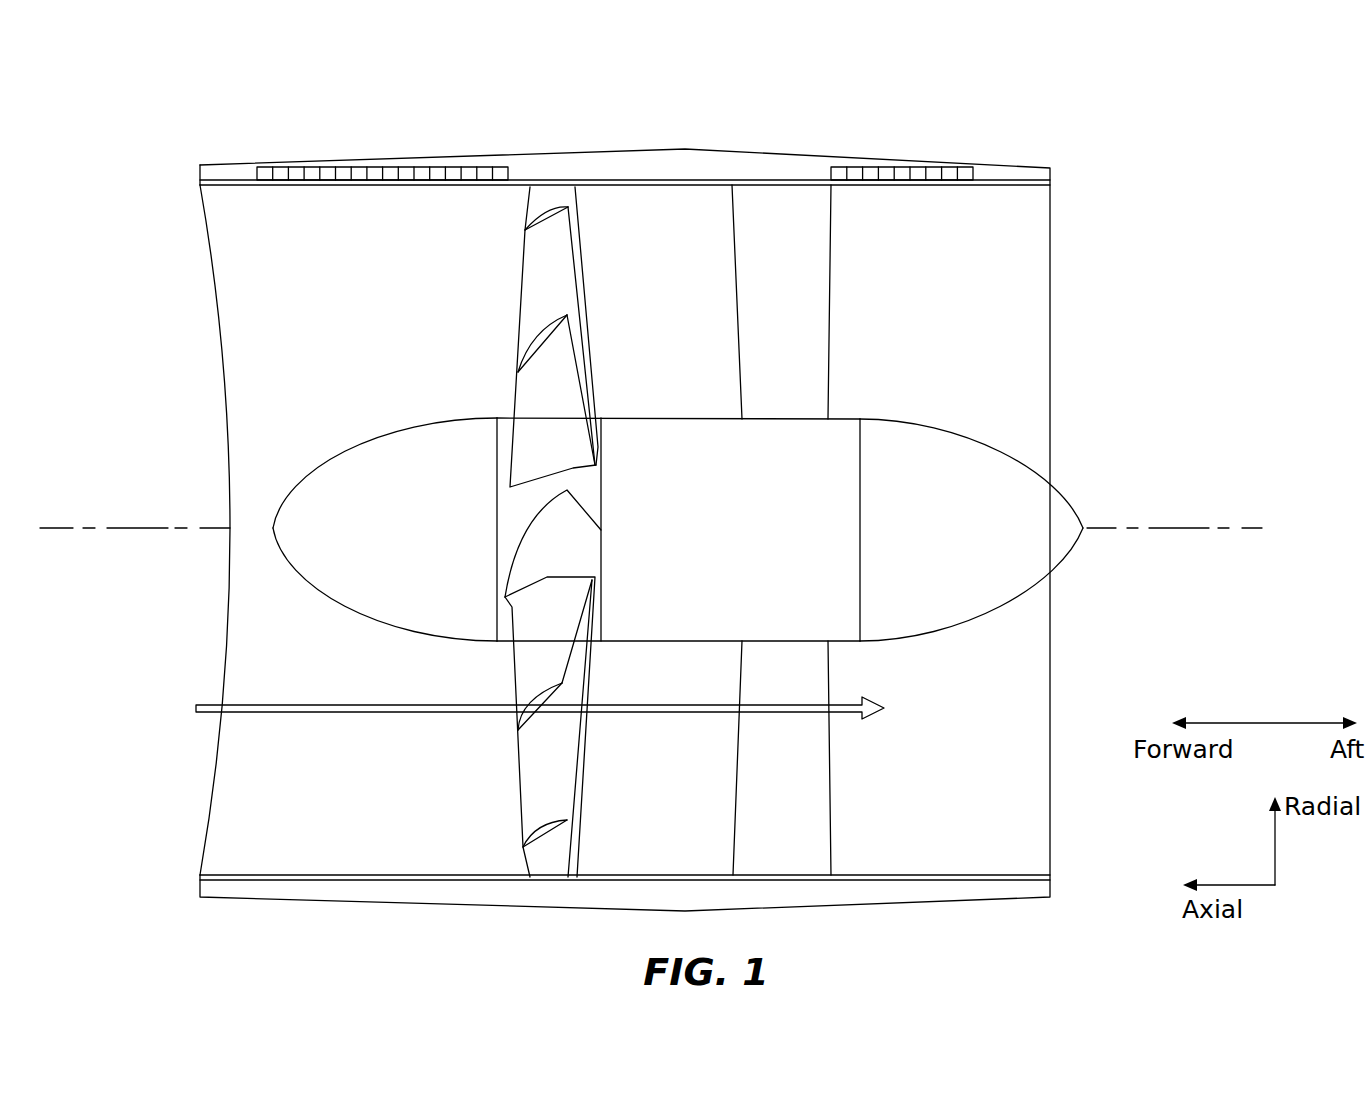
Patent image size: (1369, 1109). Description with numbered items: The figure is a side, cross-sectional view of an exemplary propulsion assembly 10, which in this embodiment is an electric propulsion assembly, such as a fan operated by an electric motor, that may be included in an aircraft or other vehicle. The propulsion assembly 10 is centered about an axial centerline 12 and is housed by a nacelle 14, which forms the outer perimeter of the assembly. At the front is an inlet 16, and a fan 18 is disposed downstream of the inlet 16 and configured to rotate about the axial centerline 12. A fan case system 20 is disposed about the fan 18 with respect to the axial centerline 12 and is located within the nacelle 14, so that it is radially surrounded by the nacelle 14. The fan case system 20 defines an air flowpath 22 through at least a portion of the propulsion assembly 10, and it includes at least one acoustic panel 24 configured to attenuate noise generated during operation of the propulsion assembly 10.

The propulsion assembly 10 is at (1149, 167).
The axial centerline 12 is at (1257, 527).
The nacelle 14 is at (842, 160).
The inlet 16 is at (178, 348).
The fan 18 is at (550, 769).
The fan case system 20 is at (781, 178).
The air flowpath 22 is at (280, 712).
The acoustic panel 24 is at (362, 167).